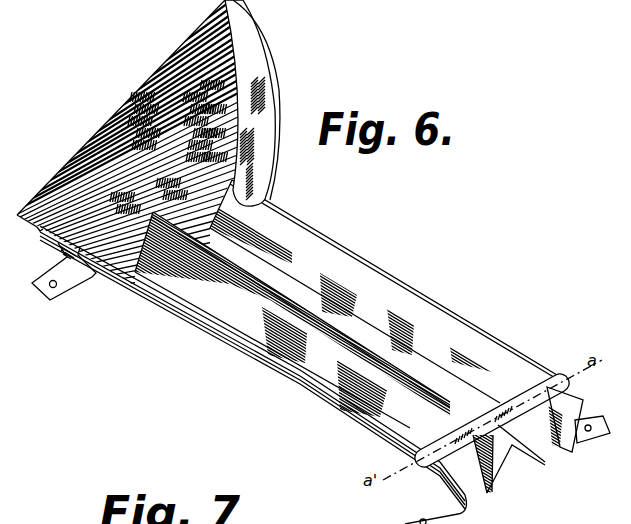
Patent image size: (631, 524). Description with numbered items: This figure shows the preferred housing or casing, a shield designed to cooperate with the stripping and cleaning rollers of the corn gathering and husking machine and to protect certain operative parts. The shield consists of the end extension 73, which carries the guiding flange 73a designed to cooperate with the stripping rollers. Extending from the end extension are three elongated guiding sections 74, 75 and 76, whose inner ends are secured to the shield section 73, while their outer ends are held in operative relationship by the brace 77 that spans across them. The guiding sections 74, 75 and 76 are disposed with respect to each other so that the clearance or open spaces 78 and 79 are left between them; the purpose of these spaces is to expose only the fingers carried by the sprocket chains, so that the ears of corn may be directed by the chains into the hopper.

The end extension 73 is at (98, 135).
The guiding flange 73a is at (260, 50).
The guiding section 74 is at (438, 328).
The guiding section 75 is at (350, 337).
The guiding section 76 is at (337, 421).
The brace 77 is at (495, 410).
The clearance or open space 78 is at (299, 290).
The clearance or open space 79 is at (230, 335).